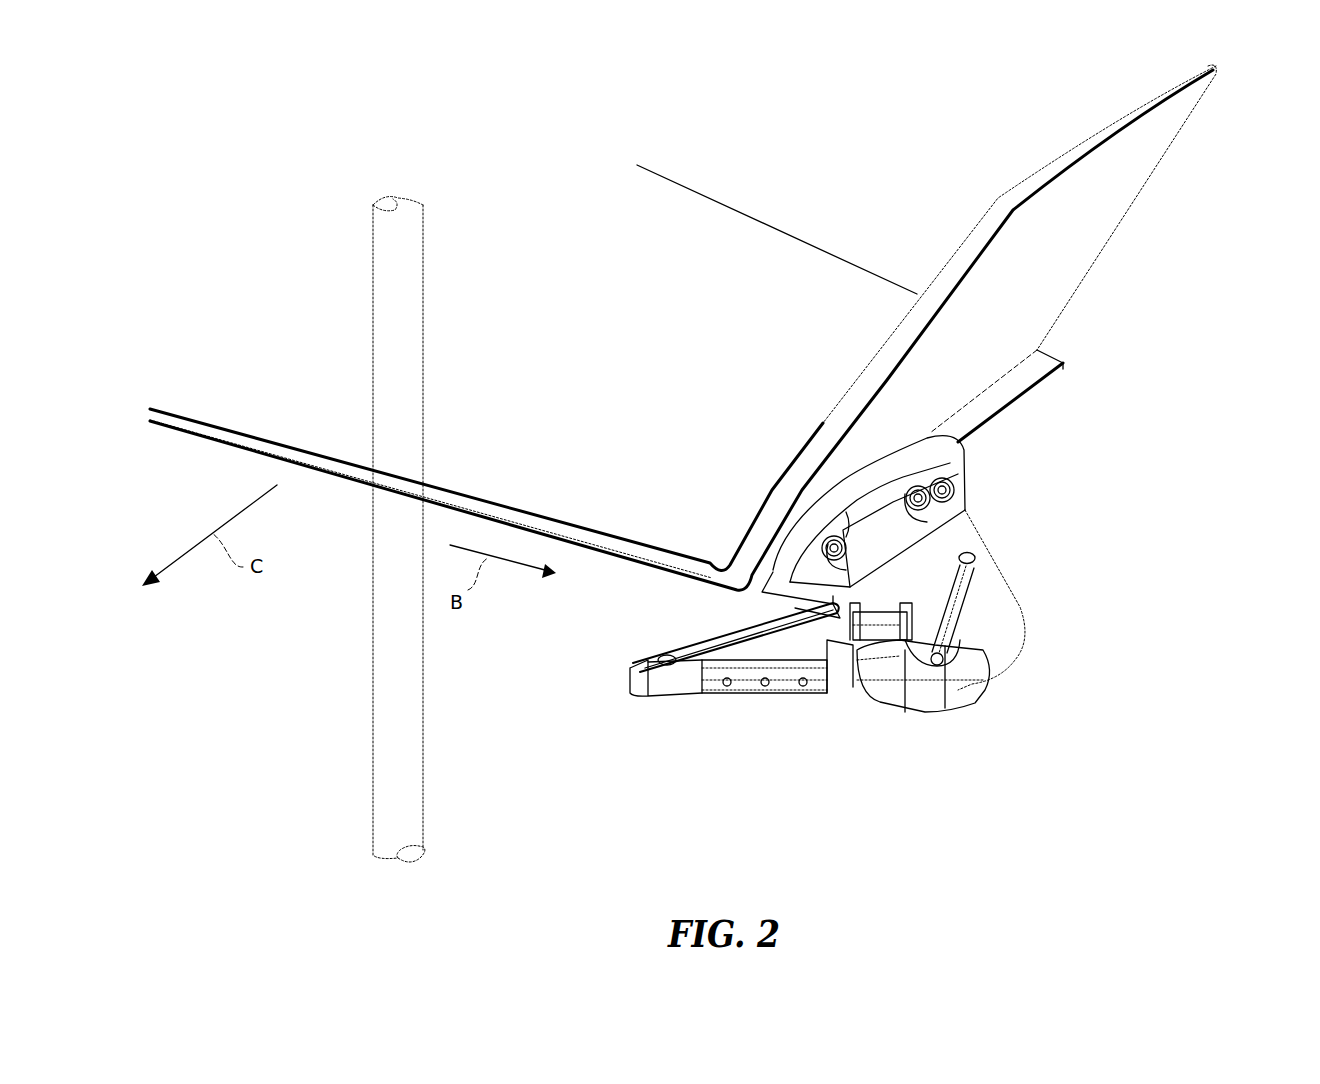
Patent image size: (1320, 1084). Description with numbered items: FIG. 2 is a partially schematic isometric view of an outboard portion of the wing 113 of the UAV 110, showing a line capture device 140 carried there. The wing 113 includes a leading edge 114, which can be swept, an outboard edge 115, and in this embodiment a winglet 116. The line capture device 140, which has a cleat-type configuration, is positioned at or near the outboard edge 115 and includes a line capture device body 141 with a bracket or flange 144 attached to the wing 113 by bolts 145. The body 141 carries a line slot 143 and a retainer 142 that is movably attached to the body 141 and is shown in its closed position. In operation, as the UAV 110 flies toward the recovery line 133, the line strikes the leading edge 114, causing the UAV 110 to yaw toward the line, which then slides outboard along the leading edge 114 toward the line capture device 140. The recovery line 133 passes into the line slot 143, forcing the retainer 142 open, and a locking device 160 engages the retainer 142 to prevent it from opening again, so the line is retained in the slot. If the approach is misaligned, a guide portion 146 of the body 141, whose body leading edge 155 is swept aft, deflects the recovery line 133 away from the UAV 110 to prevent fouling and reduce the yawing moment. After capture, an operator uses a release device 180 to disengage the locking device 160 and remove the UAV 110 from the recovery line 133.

The UAV 110 is at (1222, 240).
The wing 113 is at (800, 262).
The leading edge 114 is at (195, 428).
The outboard edge 115 is at (990, 408).
The winglet 116 is at (1067, 153).
The recovery line 133 is at (380, 717).
The line capture device 140 is at (974, 736).
The line capture device body 141 is at (1005, 617).
The retainer 142 is at (718, 692).
The line slot 143 is at (880, 622).
The bracket or flange 144 is at (975, 488).
The bolts 145 is at (906, 490).
The guide portion 146 is at (642, 668).
The body leading edge 155 is at (668, 682).
The locking device 160 is at (837, 690).
The release device 180 is at (925, 702).